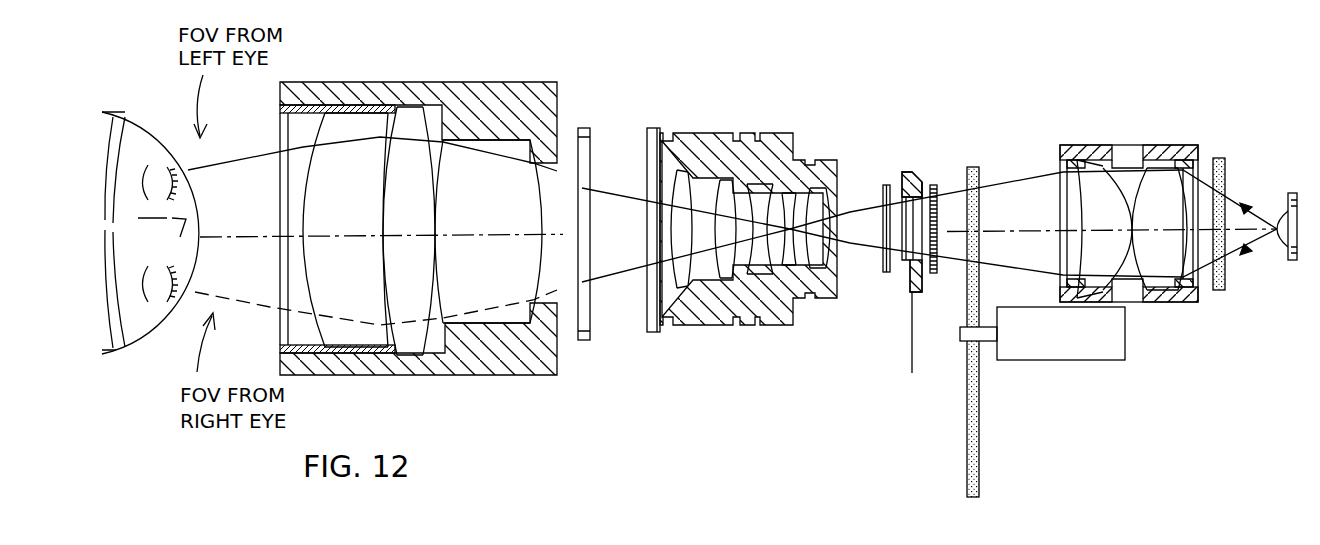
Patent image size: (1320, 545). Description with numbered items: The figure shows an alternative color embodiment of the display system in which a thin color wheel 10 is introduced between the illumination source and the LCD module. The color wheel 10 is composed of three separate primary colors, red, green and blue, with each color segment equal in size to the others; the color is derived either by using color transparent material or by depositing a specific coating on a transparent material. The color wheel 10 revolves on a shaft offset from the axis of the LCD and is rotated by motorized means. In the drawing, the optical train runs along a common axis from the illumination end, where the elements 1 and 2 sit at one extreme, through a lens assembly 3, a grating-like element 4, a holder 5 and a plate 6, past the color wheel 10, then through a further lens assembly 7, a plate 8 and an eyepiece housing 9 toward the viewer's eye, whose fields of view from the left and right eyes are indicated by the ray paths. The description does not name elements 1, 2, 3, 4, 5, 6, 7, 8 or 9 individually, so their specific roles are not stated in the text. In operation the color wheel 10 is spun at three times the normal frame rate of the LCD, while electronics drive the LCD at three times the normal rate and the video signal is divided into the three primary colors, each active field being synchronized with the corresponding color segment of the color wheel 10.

The light source / image element 1 is at (1287, 192).
The diffuser plate 2 is at (1219, 290).
The condenser lens assembly 3 is at (1073, 147).
The grating / reticle 4 is at (932, 187).
The aperture holder 5 is at (922, 280).
The filter plate 6 is at (888, 272).
The relay lens assembly 7 is at (710, 330).
The window plate 8 is at (585, 340).
The eyepiece lens housing 9 is at (513, 377).
The color wheel 10 is at (982, 482).